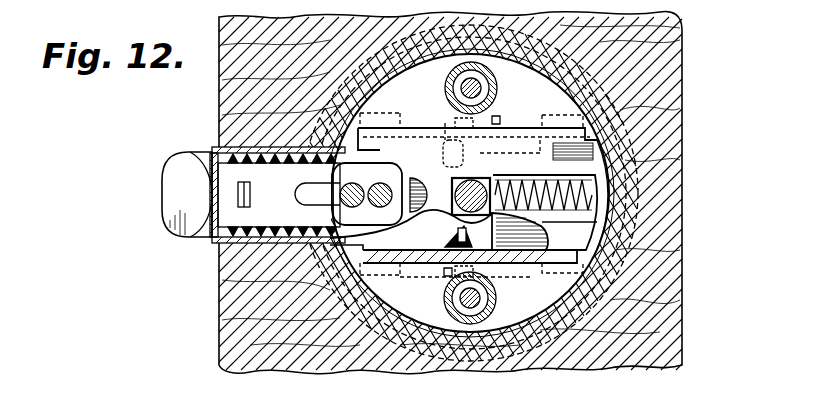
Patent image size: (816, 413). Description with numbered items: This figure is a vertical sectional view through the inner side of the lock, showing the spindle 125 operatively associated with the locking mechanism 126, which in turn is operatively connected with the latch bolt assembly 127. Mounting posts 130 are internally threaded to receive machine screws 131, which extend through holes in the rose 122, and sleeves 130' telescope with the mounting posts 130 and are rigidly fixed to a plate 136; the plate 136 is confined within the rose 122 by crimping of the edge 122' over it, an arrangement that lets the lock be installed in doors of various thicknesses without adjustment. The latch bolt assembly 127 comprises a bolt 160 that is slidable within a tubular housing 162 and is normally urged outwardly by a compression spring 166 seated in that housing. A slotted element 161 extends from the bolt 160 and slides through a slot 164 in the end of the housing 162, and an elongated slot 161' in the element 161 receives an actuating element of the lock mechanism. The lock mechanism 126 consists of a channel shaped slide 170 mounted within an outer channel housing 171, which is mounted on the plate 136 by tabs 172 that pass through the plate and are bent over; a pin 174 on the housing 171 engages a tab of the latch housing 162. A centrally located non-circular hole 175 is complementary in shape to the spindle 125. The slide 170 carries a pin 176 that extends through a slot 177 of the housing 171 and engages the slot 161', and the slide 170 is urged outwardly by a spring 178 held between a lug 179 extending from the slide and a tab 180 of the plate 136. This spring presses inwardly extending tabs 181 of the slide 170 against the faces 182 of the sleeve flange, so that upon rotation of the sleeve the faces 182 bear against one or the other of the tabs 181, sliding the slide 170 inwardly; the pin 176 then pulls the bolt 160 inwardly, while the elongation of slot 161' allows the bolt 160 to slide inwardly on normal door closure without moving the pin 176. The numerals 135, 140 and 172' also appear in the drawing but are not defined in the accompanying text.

The rose 122 is at (469, 193).
The edge of rose 122' is at (698, 181).
The spindle 125 is at (535, 120).
The locking mechanism 126 is at (375, 286).
The latch bolt assembly 127 is at (204, 147).
The mounting posts 130 is at (491, 193).
The sleeves 130' is at (420, 198).
The machine screws 131 is at (448, 96).
The block 135 is at (492, 174).
The plate 136 is at (590, 80).
The plug 140 is at (540, 222).
The bolt 160 is at (165, 184).
The slotted element 161 is at (282, 141).
The slot in slotted element 161' is at (282, 178).
The tubular housing 162 is at (222, 256).
The slot 164 is at (335, 214).
The compression spring 166 is at (268, 248).
The channel shaped slide 170 is at (538, 262).
The outer channel housing 171 is at (615, 210).
The tabs 172 is at (479, 193).
The bushing portion 172' is at (309, 322).
The pin 174 is at (373, 208).
The non-circular hole 175 is at (432, 178).
The pin 176 is at (432, 172).
The slot 177 is at (365, 278).
The spring 178 is at (622, 148).
The lug 179 is at (540, 178).
The tab 180 is at (625, 180).
The inwardly extending tabs 181 is at (455, 124).
The faces 182 is at (498, 116).